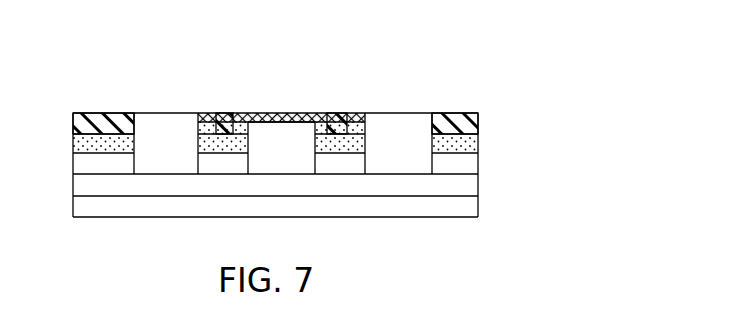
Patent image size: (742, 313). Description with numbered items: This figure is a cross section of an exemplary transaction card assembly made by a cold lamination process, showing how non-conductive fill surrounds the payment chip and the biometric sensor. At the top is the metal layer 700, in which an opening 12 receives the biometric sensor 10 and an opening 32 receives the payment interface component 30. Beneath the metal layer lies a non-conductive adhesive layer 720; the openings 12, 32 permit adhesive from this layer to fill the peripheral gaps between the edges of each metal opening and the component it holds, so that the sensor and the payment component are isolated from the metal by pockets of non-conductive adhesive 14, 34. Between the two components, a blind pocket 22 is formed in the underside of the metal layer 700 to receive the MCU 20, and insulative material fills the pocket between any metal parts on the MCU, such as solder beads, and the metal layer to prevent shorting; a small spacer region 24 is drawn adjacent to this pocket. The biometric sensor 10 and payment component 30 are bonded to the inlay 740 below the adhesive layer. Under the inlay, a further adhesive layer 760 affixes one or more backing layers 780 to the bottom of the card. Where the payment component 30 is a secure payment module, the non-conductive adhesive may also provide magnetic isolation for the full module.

The biometric sensor 10 is at (410, 113).
The opening 12 is at (453, 115).
The non-conductive adhesive 14 is at (358, 114).
The MCU 20 is at (258, 168).
The blind pocket 22 is at (340, 135).
The spacer 24 is at (323, 114).
The payment interface component 30 is at (175, 120).
The opening 32 is at (223, 115).
The non-conductive adhesive 34 is at (132, 113).
The metal layer 700 is at (478, 122).
The adhesive layer 720 is at (478, 147).
The inlay 740 is at (478, 165).
The adhesive layer 760 is at (478, 192).
The backing layer 780 is at (478, 215).